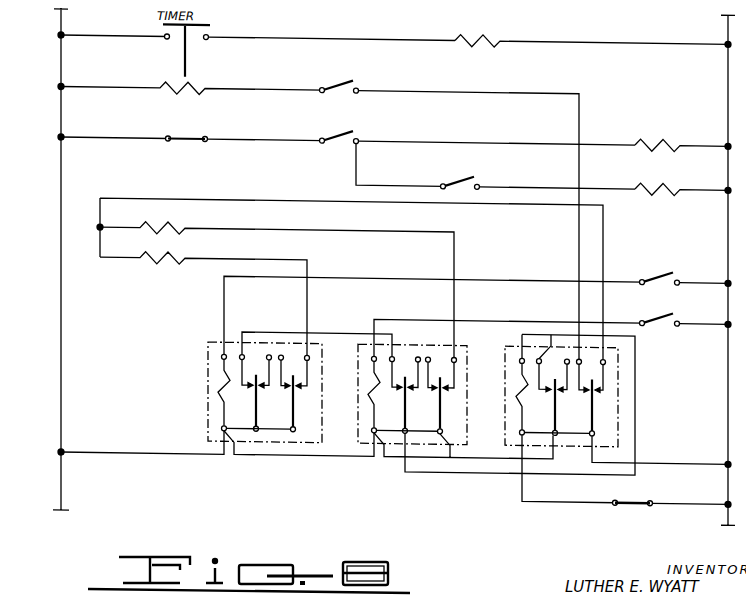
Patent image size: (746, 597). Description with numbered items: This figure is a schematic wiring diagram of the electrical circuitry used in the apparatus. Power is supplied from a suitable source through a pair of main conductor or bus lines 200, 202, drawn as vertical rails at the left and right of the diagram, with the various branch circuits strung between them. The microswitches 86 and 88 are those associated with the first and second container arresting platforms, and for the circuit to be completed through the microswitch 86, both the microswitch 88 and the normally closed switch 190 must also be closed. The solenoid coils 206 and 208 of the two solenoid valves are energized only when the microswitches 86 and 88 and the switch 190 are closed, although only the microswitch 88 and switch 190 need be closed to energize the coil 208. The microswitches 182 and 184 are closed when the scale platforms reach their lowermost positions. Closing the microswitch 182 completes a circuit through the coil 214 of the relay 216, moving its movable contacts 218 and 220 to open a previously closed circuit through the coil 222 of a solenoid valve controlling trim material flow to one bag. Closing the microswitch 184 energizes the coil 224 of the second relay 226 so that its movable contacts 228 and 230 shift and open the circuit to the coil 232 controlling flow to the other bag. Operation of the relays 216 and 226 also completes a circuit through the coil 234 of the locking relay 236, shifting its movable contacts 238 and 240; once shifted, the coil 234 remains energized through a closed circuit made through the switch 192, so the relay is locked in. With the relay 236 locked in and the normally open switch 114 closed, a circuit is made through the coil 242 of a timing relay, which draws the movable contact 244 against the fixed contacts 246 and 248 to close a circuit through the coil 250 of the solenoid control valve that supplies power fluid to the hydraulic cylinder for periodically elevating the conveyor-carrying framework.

The microswitch 86 is at (465, 172).
The microswitch 88 is at (340, 128).
The switch 114 is at (340, 75).
The microswitch 182 is at (648, 267).
The microswitch 184 is at (660, 318).
The normally closed switch 190 is at (185, 140).
The switch 192 is at (628, 497).
The main conductor or bus line 200 is at (62, 313).
The main conductor or bus line 202 is at (727, 360).
The solenoid coil 206 is at (657, 186).
The solenoid coil 208 is at (670, 134).
The coil 214 is at (216, 386).
The relay 216 is at (255, 392).
The movable contact 218 is at (255, 404).
The movable contact 220 is at (294, 396).
The coil 222 is at (155, 264).
The coil 224 is at (374, 399).
The second relay 226 is at (412, 376).
The movable contact 228 is at (406, 398).
The movable contact 230 is at (441, 410).
The coil 232 is at (165, 220).
The coil 234 is at (520, 384).
The locking relay 236 is at (572, 376).
The movable contact 238 is at (556, 410).
The movable contact 240 is at (593, 412).
The timing relay coil 242 is at (176, 90).
The movable contact 244 is at (187, 55).
The fixed contact 246 is at (167, 38).
The fixed contact 248 is at (209, 34).
The coil 250 is at (470, 41).